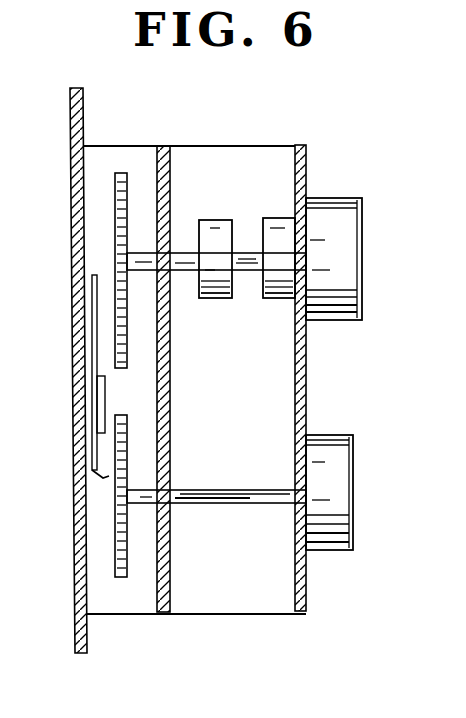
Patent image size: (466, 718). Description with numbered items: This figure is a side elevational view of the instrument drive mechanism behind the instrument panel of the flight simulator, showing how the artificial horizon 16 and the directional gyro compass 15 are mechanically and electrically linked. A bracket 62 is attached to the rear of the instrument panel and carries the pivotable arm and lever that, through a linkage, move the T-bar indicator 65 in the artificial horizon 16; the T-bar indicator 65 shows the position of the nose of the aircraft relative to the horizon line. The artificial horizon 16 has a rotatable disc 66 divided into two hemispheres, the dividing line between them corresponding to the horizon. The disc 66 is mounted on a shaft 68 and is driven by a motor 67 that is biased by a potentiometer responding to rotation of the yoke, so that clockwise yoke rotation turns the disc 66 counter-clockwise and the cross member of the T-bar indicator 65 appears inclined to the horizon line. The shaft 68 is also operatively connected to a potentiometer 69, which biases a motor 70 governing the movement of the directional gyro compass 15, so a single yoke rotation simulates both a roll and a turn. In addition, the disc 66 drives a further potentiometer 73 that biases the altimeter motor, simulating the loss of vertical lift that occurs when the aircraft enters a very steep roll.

The directional gyro compass 15 is at (104, 547).
The artificial horizon 16 is at (104, 230).
The bracket 62 is at (166, 178).
The T-bar indicator 65 is at (93, 302).
The rotatable disc 66 is at (120, 172).
The motor 67 is at (336, 215).
The shaft 68 is at (190, 271).
The potentiometer 69 is at (275, 230).
The motor 70 is at (340, 473).
The potentiometer 73 is at (217, 226).